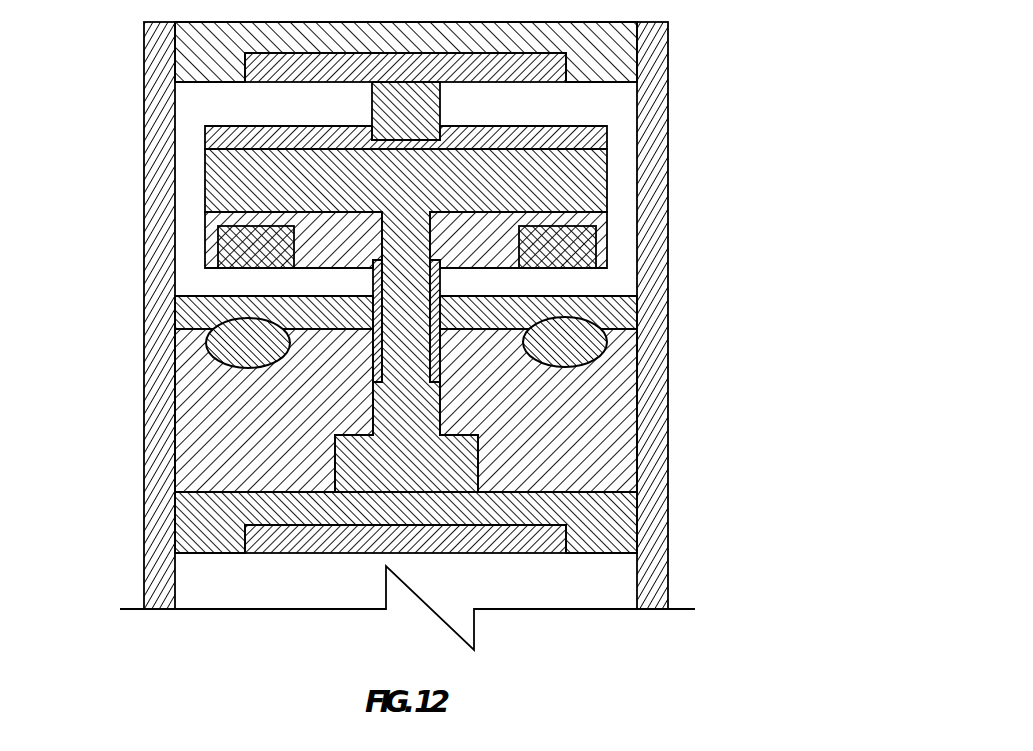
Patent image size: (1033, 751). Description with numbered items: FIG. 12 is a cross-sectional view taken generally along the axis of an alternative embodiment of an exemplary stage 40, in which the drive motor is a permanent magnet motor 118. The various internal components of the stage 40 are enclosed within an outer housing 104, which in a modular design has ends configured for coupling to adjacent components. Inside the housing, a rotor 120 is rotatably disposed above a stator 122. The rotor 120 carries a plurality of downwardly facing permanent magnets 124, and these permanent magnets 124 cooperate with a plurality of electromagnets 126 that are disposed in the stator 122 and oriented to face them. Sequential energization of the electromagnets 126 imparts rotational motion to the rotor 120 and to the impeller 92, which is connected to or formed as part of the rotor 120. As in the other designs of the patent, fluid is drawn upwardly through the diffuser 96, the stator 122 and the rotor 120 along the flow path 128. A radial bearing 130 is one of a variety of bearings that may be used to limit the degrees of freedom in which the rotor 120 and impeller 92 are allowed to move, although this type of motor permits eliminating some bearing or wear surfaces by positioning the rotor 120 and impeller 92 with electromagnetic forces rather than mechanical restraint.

The stage 40 is at (668, 50).
The impeller 92 is at (203, 142).
The diffuser 96 is at (620, 463).
The outer housing 104 is at (155, 195).
The permanent magnet motor 118 is at (386, 334).
The rotor 120 is at (608, 245).
The stator 122 is at (620, 393).
The permanent magnets 124 is at (257, 268).
The electromagnets 126 is at (622, 342).
The flow path 128 is at (490, 503).
The radial bearing 130 is at (440, 112).